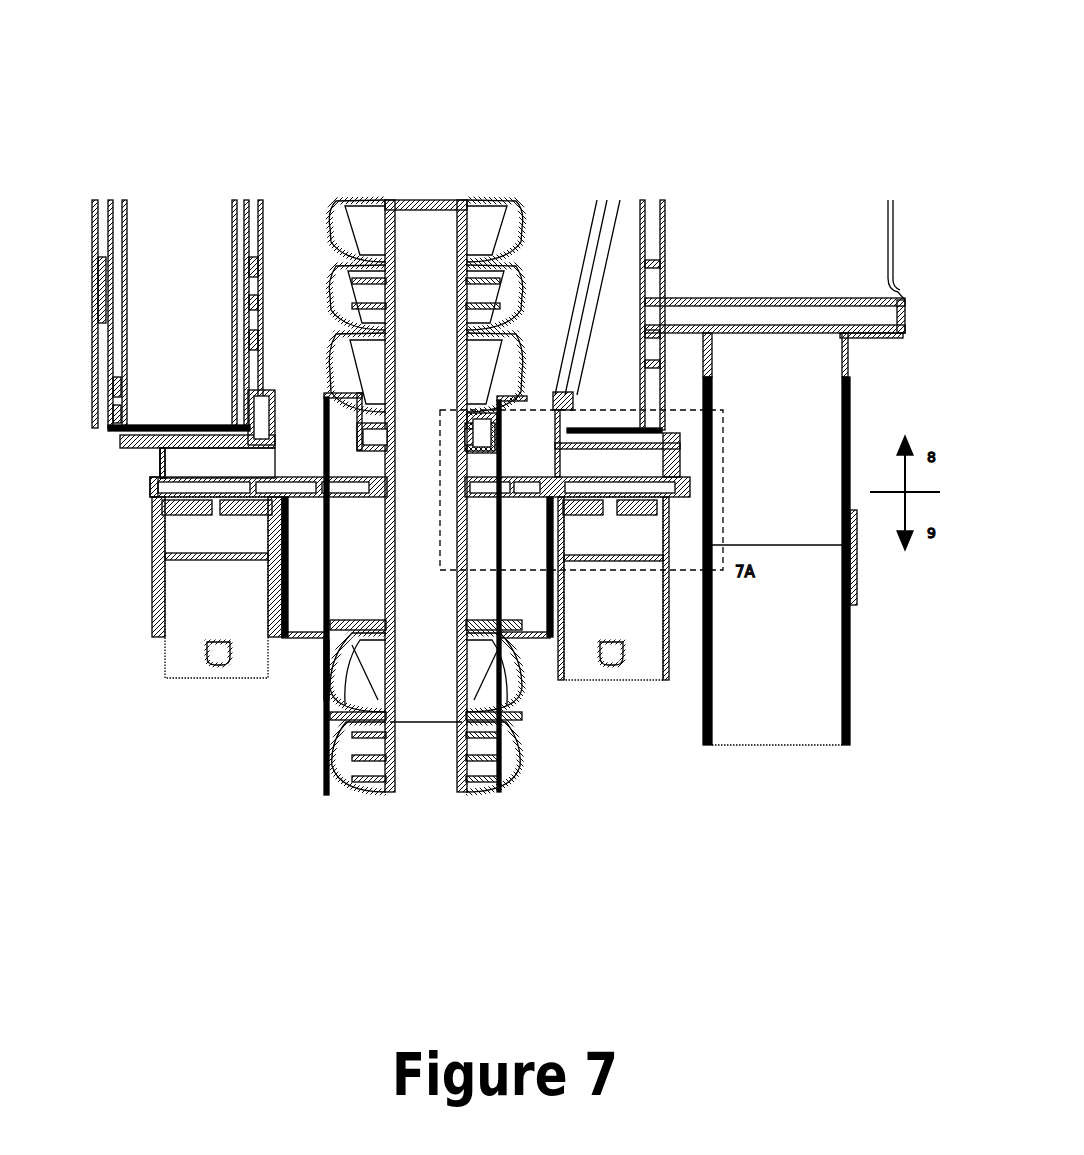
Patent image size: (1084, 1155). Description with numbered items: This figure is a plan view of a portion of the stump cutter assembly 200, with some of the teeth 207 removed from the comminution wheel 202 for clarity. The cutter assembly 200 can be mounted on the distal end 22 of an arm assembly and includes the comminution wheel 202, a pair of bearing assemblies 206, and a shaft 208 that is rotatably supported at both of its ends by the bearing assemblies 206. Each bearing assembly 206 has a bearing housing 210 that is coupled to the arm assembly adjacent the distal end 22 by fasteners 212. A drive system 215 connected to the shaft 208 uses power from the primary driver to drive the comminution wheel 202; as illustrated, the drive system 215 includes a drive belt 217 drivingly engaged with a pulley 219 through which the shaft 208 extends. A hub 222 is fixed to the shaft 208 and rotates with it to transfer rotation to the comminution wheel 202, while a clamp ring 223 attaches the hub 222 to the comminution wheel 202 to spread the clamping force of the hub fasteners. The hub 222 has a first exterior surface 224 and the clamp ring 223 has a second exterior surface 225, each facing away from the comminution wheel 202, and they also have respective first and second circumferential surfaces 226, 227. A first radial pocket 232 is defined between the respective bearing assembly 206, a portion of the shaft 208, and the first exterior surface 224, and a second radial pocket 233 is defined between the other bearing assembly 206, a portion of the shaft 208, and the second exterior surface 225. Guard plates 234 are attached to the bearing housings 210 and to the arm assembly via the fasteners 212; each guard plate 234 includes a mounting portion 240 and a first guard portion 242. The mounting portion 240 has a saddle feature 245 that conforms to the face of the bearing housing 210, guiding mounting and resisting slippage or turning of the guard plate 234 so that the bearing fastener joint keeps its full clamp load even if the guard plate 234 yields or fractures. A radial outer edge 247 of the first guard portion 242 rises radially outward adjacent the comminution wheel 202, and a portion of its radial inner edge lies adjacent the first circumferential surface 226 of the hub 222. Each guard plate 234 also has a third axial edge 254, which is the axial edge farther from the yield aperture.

The cutter assembly 200 is at (752, 78).
The comminution wheel 202 is at (418, 248).
The bearing assemblies 206 is at (150, 652).
The teeth 207 is at (488, 220).
The shaft 208 is at (545, 517).
The bearing housing 210 is at (655, 490).
The fasteners 212 is at (185, 508).
The drive system 215 is at (857, 724).
The drive belt 217 is at (810, 340).
The pulley 219 is at (845, 662).
The distal end 22 is at (145, 462).
The hub 222 is at (283, 672).
The clamp ring 223 is at (520, 585).
The first exterior surface 224 is at (320, 685).
The second exterior surface 225 is at (505, 621).
The first circumferential surface 226 is at (368, 567).
The second circumferential surface 227 is at (482, 577).
The first radial pocket 232 is at (313, 640).
The second radial pocket 233 is at (529, 684).
The guard plates 234 is at (233, 478).
The mounting portion 240 is at (655, 474).
The first guard portion 242 is at (527, 477).
The saddle feature 245 is at (175, 476).
The radial outer edge 247 is at (342, 478).
The third axial edge 254 is at (148, 490).